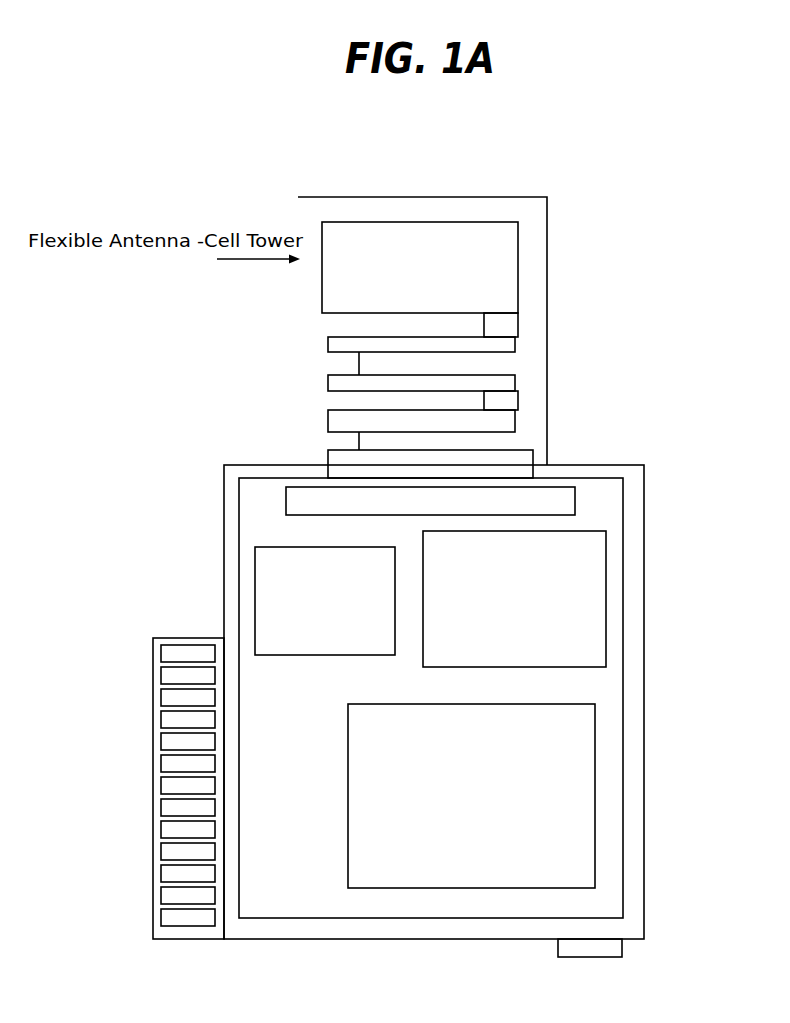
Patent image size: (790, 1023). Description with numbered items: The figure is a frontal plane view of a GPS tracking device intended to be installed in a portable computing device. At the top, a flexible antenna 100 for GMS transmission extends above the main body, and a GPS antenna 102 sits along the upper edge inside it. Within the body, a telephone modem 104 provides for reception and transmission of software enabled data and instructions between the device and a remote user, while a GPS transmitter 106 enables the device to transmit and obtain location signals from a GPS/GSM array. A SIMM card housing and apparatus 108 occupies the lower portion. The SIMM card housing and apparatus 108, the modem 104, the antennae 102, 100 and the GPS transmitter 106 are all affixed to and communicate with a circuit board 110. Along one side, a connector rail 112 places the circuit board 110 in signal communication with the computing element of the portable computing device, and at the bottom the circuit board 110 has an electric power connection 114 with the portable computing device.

The flexible antenna 100 is at (422, 337).
The GPS antenna 102 is at (430, 501).
The telephone modem 104 is at (325, 601).
The GPS transmitter 106 is at (514, 599).
The SIMM card housing and apparatus 108 is at (471, 796).
The circuit board 110 is at (648, 712).
The connector rail 112 is at (209, 946).
The electric power connection 114 is at (622, 965).